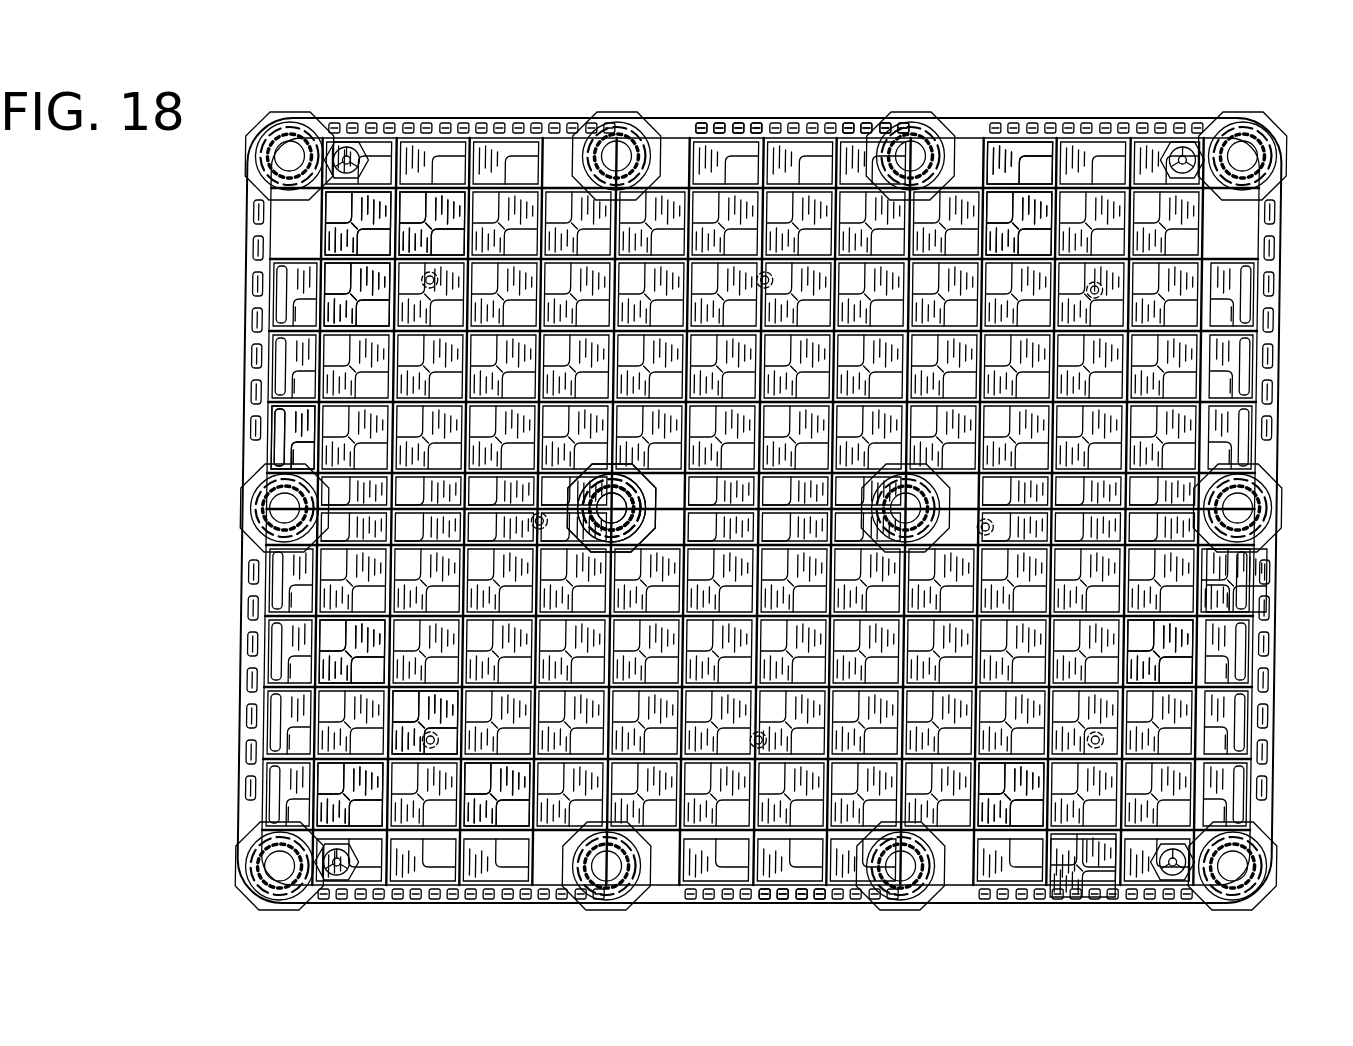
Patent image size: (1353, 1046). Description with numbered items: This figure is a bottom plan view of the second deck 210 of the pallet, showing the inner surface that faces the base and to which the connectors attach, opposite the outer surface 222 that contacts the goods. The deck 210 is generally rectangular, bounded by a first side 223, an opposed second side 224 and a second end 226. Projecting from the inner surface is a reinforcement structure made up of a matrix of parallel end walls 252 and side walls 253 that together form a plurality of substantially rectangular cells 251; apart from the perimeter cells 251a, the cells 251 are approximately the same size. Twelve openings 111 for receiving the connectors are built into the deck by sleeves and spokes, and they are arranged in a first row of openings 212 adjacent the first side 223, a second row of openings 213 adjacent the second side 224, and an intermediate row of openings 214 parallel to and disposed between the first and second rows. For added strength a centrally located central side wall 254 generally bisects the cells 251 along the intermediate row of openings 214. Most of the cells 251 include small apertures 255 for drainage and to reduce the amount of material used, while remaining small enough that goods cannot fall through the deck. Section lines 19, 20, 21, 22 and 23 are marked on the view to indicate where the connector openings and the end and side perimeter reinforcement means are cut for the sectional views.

The deck 210 is at (775, 106).
The openings 111 is at (291, 150).
The first row of openings 212 is at (228, 152).
The second row of openings 213 is at (216, 861).
The intermediate row of openings 214 is at (214, 513).
The outer surface 222 is at (743, 146).
The first side 223 is at (853, 109).
The second side 224 is at (812, 914).
The second end 226 is at (1300, 406).
The cells 251 is at (451, 196).
The perimeter cells 251a is at (1086, 876).
The end walls 252 is at (396, 224).
The side walls 253 is at (1026, 186).
The central side wall 254 is at (340, 506).
The apertures 255 is at (192, 430).
The section line 19 is at (598, 472).
The section line 20 is at (252, 661).
The section line 21 is at (252, 800).
The section line 22 is at (433, 756).
The section line 23 is at (487, 772).